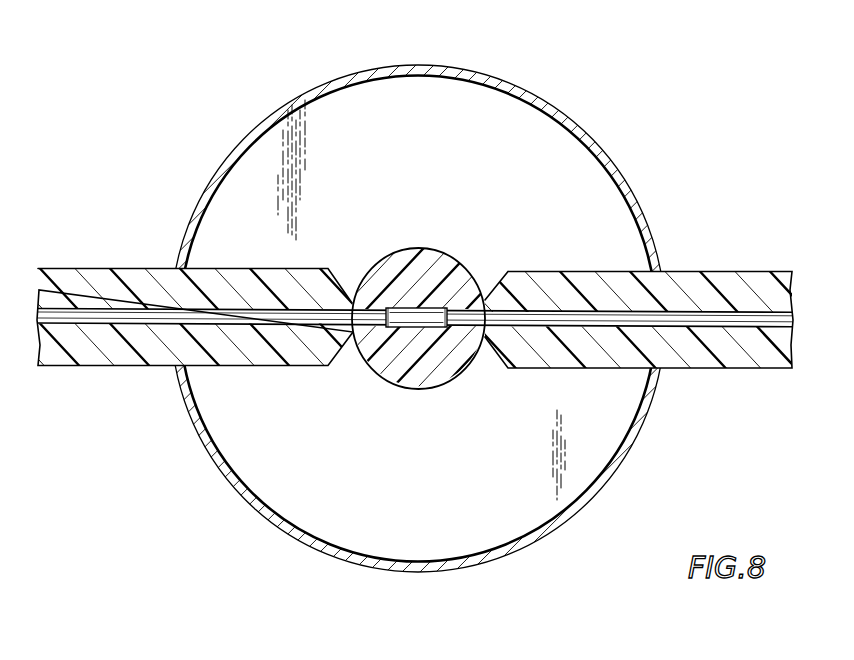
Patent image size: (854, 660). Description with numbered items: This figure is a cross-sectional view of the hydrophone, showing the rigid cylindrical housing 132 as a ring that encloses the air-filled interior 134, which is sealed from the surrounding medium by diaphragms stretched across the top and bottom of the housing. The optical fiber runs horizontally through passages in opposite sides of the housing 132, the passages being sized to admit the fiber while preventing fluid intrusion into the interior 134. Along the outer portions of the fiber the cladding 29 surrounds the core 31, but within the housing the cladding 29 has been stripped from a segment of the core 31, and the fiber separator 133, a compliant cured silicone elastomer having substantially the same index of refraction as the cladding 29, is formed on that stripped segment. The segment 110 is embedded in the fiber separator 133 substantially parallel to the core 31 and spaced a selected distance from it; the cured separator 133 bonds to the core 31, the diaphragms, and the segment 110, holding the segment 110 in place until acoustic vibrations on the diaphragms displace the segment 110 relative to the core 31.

The cladding 29 is at (137, 281).
The core 31 is at (75, 310).
The segment 110 is at (436, 312).
The rigid cylindrical housing 132 is at (333, 83).
The fiber separator 133 is at (400, 262).
The air-filled interior 134 is at (497, 113).